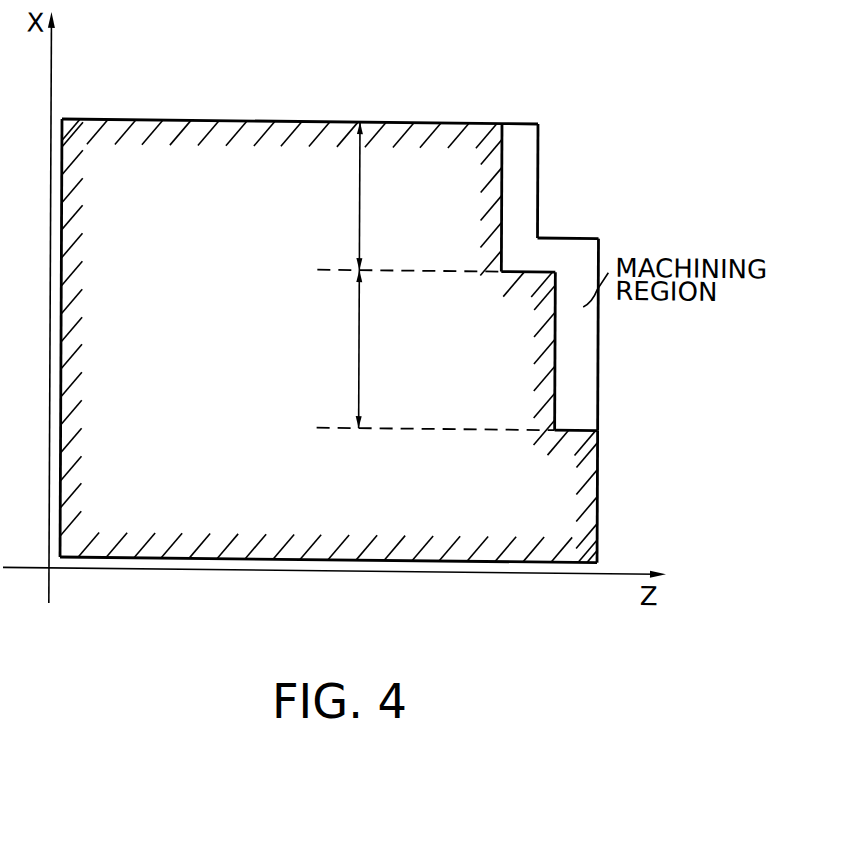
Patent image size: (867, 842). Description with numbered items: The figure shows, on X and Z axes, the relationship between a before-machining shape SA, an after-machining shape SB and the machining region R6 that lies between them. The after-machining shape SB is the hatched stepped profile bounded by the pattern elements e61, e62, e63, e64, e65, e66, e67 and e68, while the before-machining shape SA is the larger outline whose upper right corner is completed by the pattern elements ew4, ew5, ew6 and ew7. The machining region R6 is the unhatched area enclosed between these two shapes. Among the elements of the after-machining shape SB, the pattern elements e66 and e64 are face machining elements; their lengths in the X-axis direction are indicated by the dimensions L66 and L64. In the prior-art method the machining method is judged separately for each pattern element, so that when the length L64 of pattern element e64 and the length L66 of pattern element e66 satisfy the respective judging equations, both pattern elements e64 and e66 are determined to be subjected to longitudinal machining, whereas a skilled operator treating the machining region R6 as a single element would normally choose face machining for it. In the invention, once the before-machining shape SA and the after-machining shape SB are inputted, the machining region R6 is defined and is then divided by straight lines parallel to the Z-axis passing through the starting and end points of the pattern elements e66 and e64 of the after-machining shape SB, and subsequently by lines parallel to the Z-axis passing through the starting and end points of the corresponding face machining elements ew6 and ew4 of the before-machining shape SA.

The after-machining shape SB is at (98, 155).
The before-machining shape SA is at (540, 129).
The bottom edge element of after-machining shape e61 is at (328, 545).
The lower right edge element of after-machining shape e62 is at (570, 496).
The lower step edge element e63 is at (570, 451).
The pattern element e64 is at (528, 351).
The upper step edge element e65 is at (528, 291).
The pattern element e66 is at (473, 197).
The top edge element of after-machining shape e67 is at (282, 140).
The left edge element of after-machining shape e68 is at (87, 338).
The pattern element ew4 is at (630, 335).
The step edge of before-machining shape ew5 is at (569, 224).
The pattern element ew6 is at (570, 181).
The top edge of before-machining shape ew7 is at (527, 108).
The length of the X-axis direction in pattern element e64 L64 is at (386, 349).
The length of the X-axis direction in pattern element e66 L66 is at (385, 196).
The machining region R6 is at (577, 348).